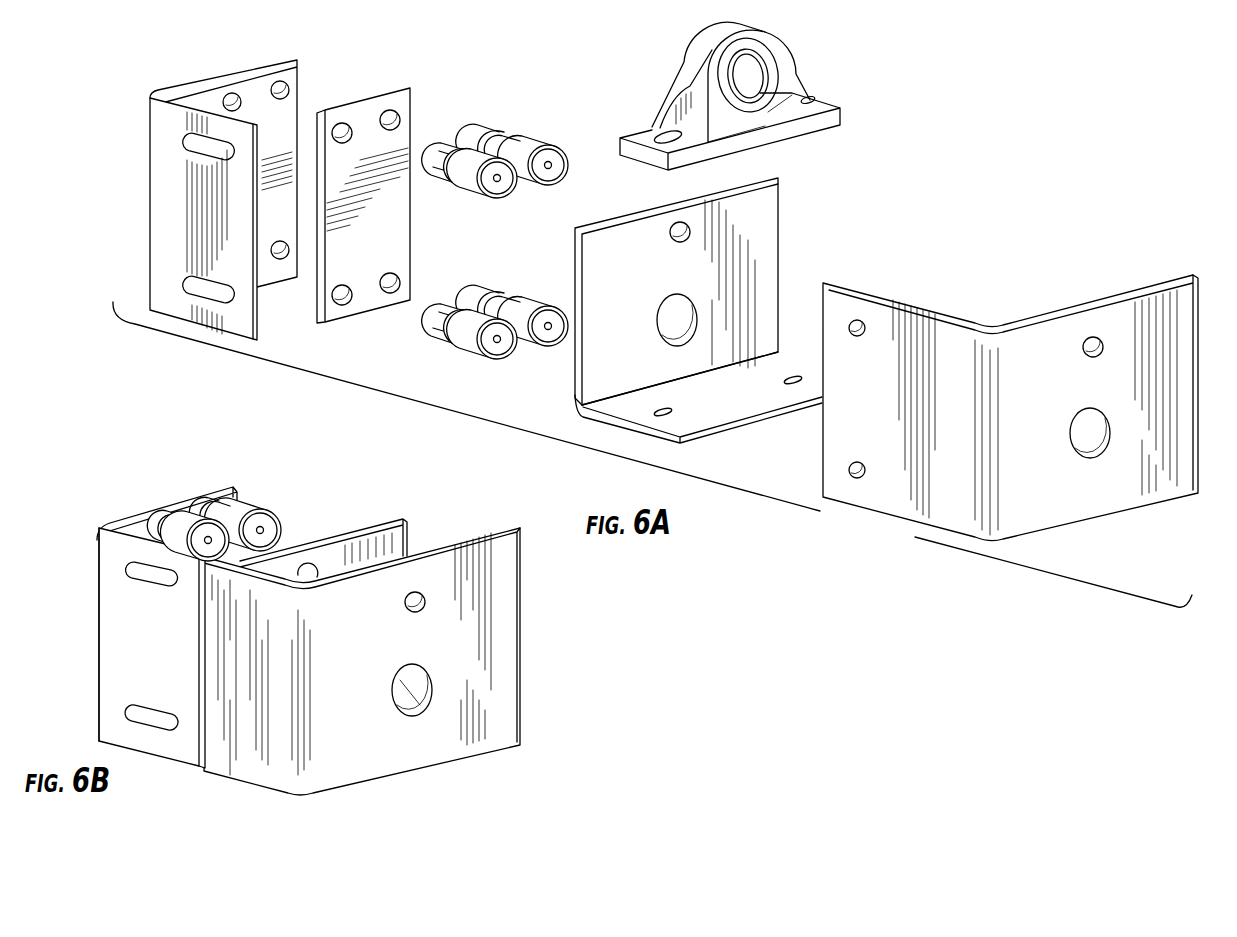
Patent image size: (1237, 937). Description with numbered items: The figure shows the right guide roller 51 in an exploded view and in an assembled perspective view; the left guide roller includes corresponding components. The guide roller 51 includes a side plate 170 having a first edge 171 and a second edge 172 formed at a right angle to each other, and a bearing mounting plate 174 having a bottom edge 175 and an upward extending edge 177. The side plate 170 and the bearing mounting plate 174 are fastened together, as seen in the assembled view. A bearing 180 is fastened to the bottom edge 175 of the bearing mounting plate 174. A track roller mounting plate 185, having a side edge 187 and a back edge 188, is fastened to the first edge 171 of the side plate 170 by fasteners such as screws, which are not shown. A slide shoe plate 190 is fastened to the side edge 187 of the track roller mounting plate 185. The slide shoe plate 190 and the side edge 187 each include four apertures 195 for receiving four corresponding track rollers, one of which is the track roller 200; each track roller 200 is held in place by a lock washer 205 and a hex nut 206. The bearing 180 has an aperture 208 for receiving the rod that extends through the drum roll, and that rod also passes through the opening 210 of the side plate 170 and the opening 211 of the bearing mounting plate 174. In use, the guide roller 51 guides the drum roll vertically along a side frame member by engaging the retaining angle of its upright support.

In FIG. 6A, the right guide roller 51 is at (950, 113).
In FIG. 6B, the right guide roller 51 is at (556, 692).
In FIG. 6A, the side plate 170 is at (1010, 412).
In FIG. 6B, the side plate 170 is at (392, 665).
In FIG. 6A, the first edge 171 is at (912, 495).
In FIG. 6A, the second edge 172 is at (1108, 412).
In FIG. 6A, the bearing mounting plate 174 is at (690, 335).
In FIG. 6B, the bearing mounting plate 174 is at (377, 514).
In FIG. 6A, the bottom edge 175 is at (728, 410).
In FIG. 6A, the upward extending edge 177 is at (708, 291).
In FIG. 6A, the bearing 180 is at (755, 90).
In FIG. 6A, the track roller mounting plate 185 is at (191, 183).
In FIG. 6B, the track roller mounting plate 185 is at (82, 600).
In FIG. 6A, the side edge 187 is at (203, 80).
In FIG. 6A, the back edge 188 is at (168, 218).
In FIG. 6A, the slide shoe plate 190 is at (361, 174).
In FIG. 6B, the slide shoe plate 190 is at (207, 507).
In FIG. 6A, the apertures 195 is at (387, 118).
In FIG. 6A, the track roller 200 is at (466, 217).
In FIG. 6B, the track roller 200 is at (258, 500).
In FIG. 6A, the lock washer 205 is at (510, 132).
In FIG. 6A, the hex nut 206 is at (480, 132).
In FIG. 6A, the aperture 208 is at (755, 78).
In FIG. 6A, the opening 210 is at (1085, 432).
In FIG. 6B, the opening 210 is at (415, 690).
In FIG. 6A, the opening 211 is at (678, 322).